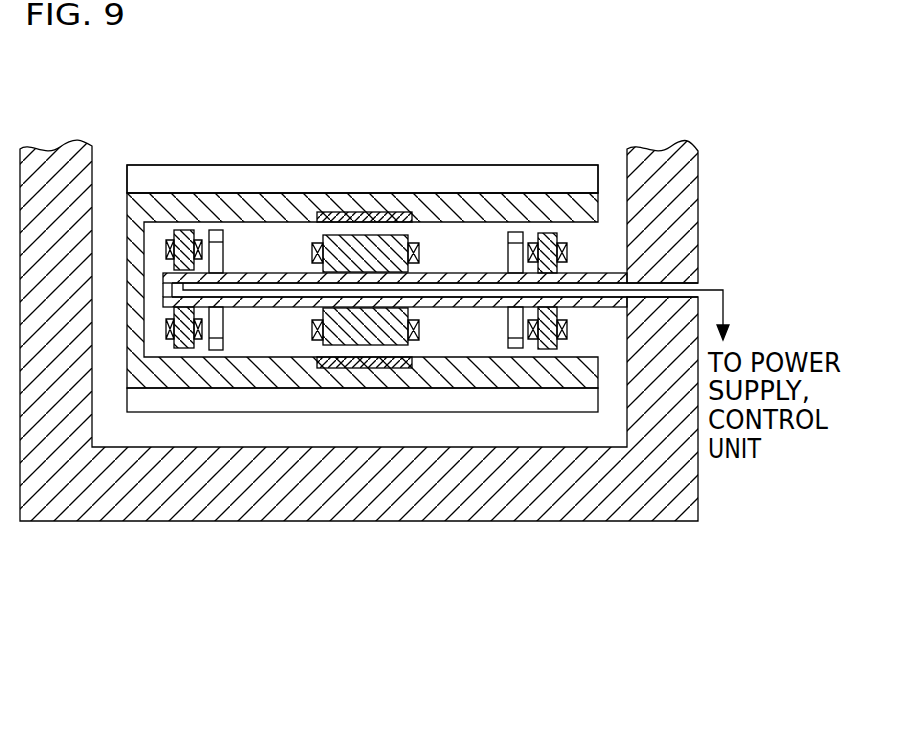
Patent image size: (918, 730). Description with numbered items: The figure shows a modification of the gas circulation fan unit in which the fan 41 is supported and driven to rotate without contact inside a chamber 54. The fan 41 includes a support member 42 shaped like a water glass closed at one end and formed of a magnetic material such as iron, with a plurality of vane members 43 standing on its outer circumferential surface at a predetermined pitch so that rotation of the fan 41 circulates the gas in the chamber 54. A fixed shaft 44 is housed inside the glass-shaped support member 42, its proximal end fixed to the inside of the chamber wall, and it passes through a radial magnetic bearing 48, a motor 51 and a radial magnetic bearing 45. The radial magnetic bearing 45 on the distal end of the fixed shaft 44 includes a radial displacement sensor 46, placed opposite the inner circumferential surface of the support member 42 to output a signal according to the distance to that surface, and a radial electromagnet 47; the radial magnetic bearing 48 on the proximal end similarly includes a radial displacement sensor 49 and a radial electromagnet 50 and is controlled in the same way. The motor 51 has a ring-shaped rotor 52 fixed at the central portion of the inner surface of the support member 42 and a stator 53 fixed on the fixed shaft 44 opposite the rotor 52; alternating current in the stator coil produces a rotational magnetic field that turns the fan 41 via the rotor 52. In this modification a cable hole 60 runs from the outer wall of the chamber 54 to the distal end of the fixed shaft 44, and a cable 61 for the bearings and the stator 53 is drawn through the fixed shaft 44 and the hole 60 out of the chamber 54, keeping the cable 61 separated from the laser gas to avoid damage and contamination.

The fan 41 is at (428, 165).
The support member 42 is at (456, 200).
The vane members 43 is at (488, 182).
The fixed shaft 44 is at (440, 303).
The radial magnetic bearing 45 is at (198, 205).
The radial displacement sensor 46 is at (217, 228).
The radial electromagnet 47 is at (184, 228).
The radial magnetic bearing 48 is at (543, 206).
The radial displacement sensor 49 is at (516, 230).
The radial electromagnet 50 is at (553, 233).
The motor 51 is at (365, 214).
The rotor 52 is at (344, 212).
The stator 53 is at (383, 240).
The chamber 54 is at (385, 502).
The cable hole 60 is at (485, 292).
The cable 61 is at (717, 285).